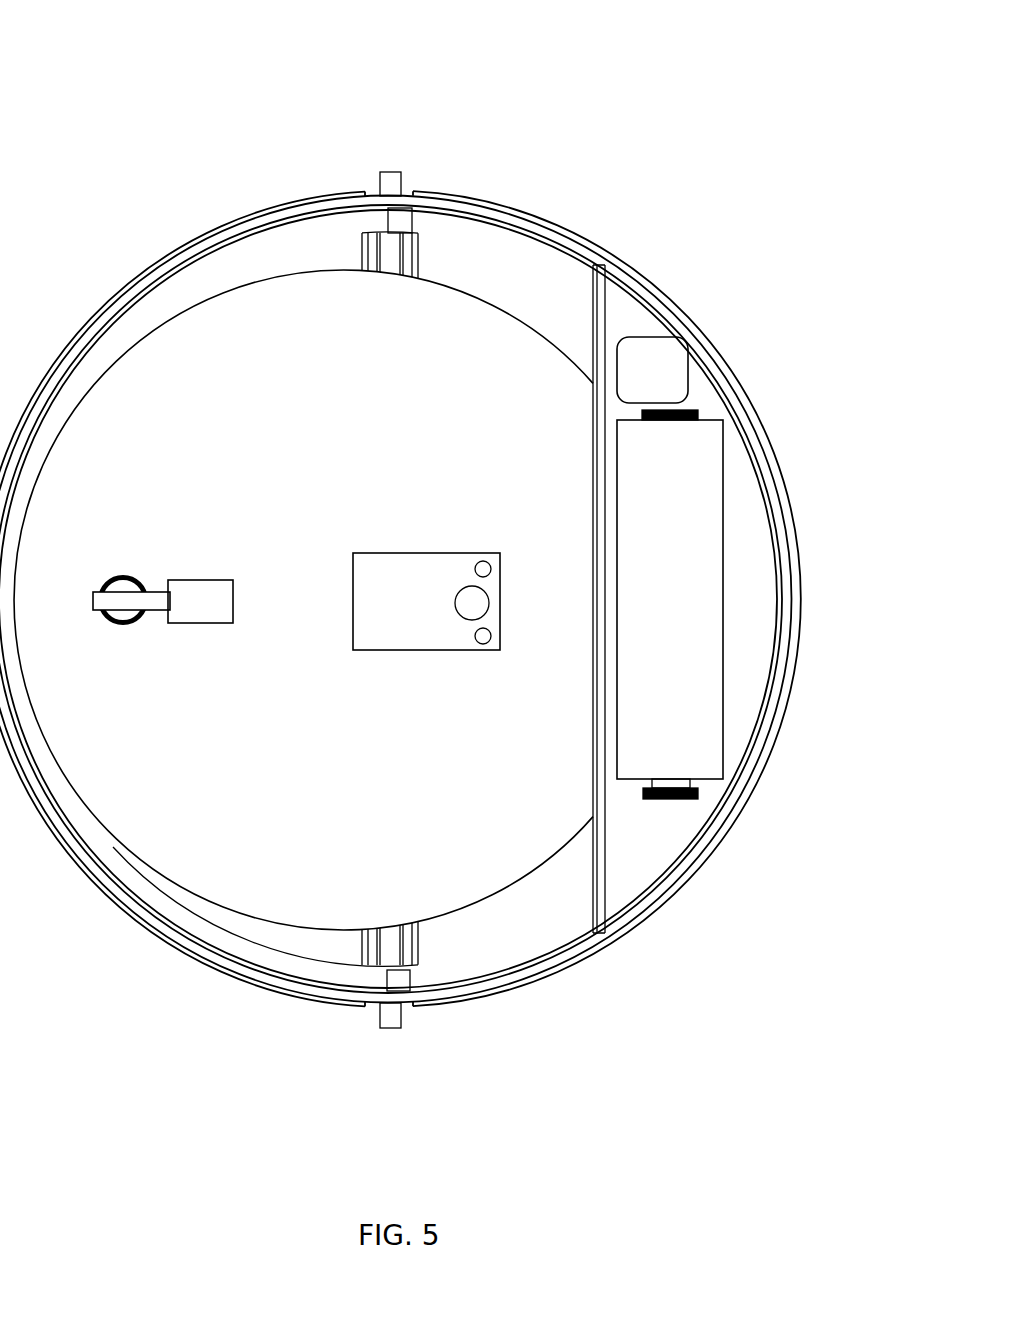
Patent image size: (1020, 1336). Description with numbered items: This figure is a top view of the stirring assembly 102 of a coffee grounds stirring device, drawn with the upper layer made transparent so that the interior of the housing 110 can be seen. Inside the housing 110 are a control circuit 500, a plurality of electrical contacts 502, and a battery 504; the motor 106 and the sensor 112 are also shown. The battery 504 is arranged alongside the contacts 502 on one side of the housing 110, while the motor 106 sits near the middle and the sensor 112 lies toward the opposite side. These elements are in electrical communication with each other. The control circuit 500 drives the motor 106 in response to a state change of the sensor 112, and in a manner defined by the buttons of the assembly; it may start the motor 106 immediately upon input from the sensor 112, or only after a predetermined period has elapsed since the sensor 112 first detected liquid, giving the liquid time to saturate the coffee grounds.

The stirring assembly 102 is at (686, 131).
The housing 110 is at (620, 282).
The control circuit 500 is at (670, 345).
The electrical contacts 502 is at (693, 410).
The battery 504 is at (693, 540).
The motor 106 is at (398, 653).
The sensor 112 is at (172, 625).